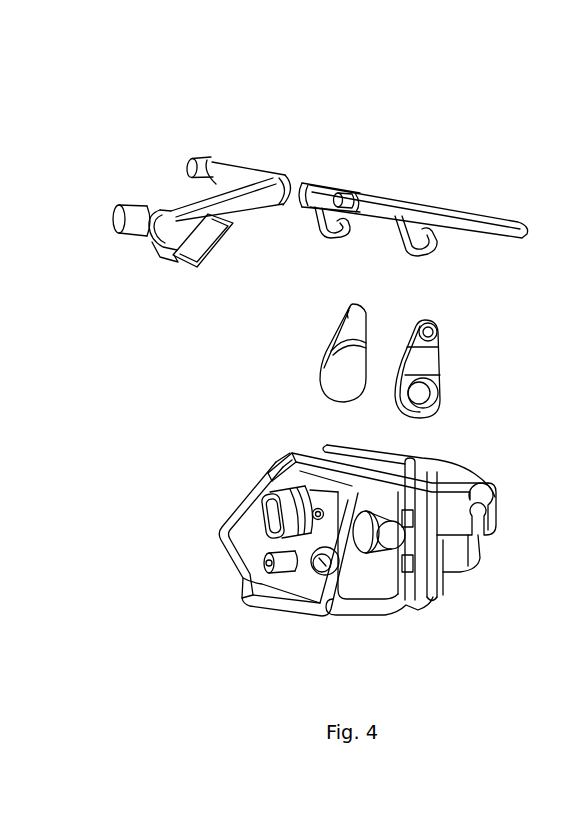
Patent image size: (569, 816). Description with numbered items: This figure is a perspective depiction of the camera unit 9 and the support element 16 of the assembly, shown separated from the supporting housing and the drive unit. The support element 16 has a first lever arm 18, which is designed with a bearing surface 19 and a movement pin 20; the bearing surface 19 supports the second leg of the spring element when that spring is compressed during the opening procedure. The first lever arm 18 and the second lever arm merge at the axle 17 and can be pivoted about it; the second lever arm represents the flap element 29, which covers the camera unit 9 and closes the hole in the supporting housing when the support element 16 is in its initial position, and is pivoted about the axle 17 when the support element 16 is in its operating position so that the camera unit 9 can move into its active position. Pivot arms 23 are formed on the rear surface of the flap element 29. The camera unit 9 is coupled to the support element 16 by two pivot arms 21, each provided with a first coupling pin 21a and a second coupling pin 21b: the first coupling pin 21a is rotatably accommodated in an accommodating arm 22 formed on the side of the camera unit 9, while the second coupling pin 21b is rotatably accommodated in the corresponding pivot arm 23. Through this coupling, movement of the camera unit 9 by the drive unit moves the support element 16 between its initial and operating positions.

The camera unit 9 is at (233, 481).
The support element 16 is at (313, 162).
The axle 17 is at (203, 158).
The first lever arm 18 is at (197, 200).
The bearing surface 19 is at (190, 249).
The movement pin 20 is at (122, 217).
The pivot arm 21 is at (337, 358).
The first coupling pin 21a is at (427, 392).
The second coupling pin 21b is at (340, 306).
The accommodating arm 22 is at (495, 492).
The pivot arm 23 is at (337, 237).
The flap element 29 is at (383, 198).